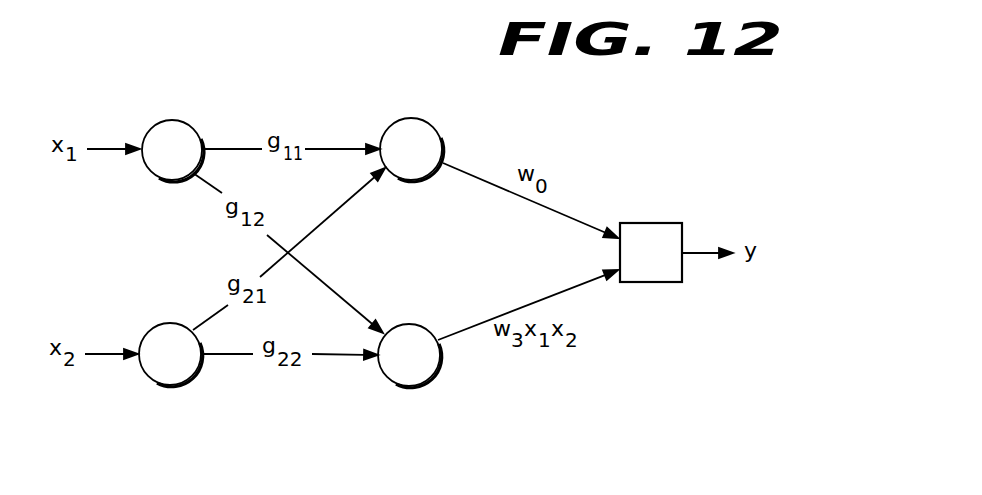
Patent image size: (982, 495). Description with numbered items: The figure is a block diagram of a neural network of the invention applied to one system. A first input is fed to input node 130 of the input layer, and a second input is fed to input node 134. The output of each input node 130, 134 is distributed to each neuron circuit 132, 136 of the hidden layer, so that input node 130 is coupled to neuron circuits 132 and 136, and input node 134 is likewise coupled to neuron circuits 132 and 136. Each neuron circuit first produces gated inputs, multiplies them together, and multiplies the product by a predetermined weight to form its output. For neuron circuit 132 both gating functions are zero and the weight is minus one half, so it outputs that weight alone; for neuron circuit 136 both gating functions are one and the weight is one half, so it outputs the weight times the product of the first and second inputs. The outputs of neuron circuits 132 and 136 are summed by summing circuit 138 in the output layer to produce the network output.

The input node 130 is at (178, 120).
The neuron circuit 132 is at (403, 118).
The input node 134 is at (173, 385).
The neuron circuit 136 is at (402, 385).
The summing circuit 138 is at (662, 223).